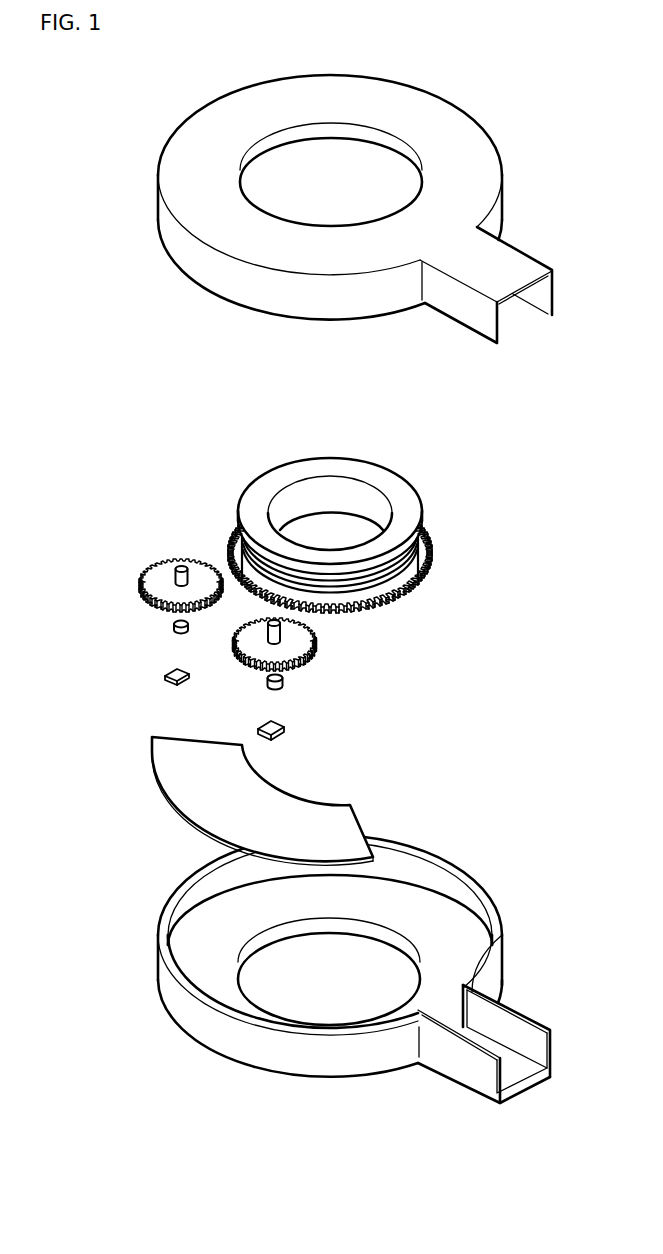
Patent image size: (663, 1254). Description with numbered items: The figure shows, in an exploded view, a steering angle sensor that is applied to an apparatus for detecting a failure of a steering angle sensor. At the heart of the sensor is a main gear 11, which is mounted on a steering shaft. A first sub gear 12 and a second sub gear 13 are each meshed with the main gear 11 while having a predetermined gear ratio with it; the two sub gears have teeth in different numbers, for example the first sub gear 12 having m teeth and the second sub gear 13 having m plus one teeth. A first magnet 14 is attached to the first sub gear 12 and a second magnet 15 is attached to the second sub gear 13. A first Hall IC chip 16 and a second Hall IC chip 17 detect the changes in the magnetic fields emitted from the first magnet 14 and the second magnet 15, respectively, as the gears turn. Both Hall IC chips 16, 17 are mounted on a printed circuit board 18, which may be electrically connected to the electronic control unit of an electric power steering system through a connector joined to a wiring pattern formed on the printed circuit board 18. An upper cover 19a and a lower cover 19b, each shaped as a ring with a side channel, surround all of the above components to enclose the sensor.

The main gear 11 is at (433, 538).
The first sub gear 12 is at (143, 583).
The second sub gear 13 is at (315, 640).
The first magnet 14 is at (176, 626).
The second magnet 15 is at (285, 679).
The first Hall IC chip 16 is at (167, 671).
The second Hall IC chip 17 is at (284, 724).
The printed circuit board 18 is at (162, 765).
The upper cover 19a is at (162, 212).
The lower cover 19b is at (165, 973).